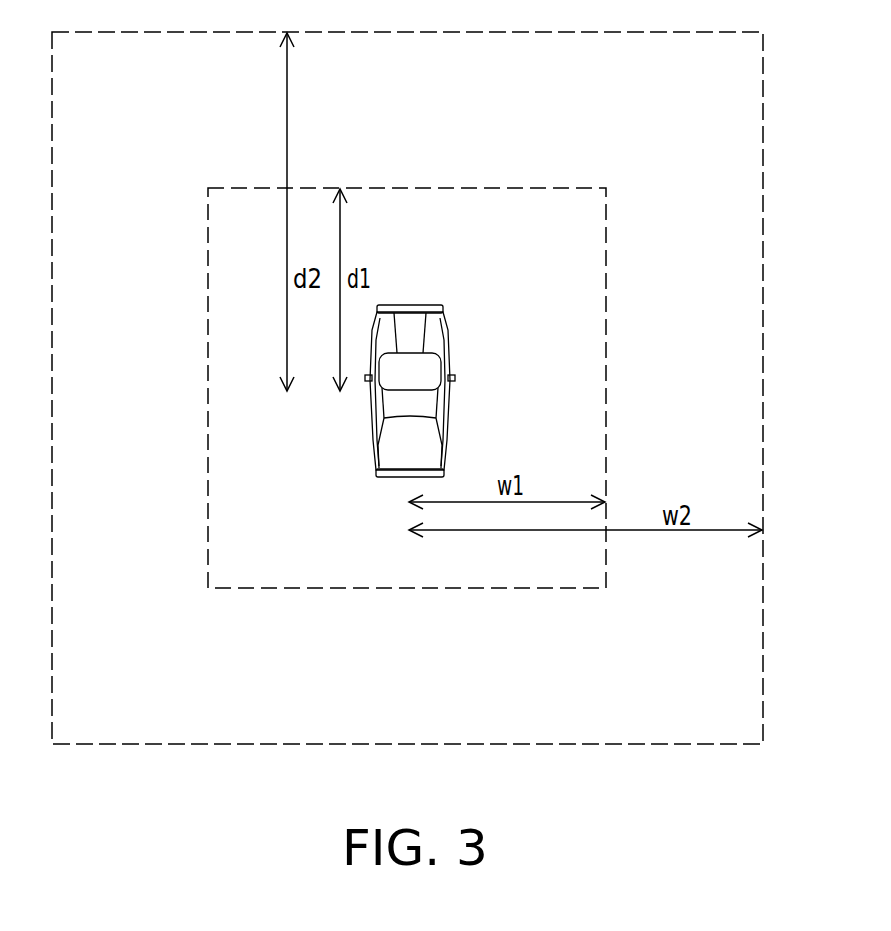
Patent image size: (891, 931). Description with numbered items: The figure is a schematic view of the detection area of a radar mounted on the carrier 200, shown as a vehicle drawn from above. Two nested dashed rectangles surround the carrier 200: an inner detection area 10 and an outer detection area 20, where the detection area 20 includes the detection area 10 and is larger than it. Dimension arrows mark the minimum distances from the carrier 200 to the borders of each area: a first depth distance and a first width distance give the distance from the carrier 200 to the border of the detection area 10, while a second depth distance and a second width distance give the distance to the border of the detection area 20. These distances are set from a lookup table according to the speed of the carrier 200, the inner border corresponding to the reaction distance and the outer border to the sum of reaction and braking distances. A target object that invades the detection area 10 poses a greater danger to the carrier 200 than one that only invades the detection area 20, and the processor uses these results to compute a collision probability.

The detection area 10 is at (606, 230).
The detection area 20 is at (763, 164).
The carrier 200 is at (433, 318).